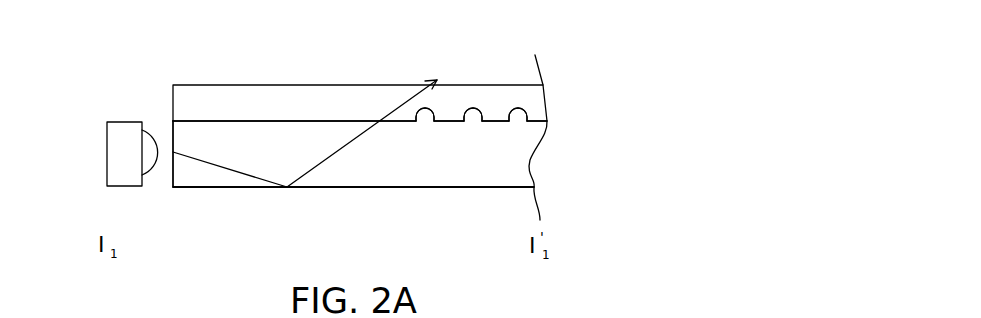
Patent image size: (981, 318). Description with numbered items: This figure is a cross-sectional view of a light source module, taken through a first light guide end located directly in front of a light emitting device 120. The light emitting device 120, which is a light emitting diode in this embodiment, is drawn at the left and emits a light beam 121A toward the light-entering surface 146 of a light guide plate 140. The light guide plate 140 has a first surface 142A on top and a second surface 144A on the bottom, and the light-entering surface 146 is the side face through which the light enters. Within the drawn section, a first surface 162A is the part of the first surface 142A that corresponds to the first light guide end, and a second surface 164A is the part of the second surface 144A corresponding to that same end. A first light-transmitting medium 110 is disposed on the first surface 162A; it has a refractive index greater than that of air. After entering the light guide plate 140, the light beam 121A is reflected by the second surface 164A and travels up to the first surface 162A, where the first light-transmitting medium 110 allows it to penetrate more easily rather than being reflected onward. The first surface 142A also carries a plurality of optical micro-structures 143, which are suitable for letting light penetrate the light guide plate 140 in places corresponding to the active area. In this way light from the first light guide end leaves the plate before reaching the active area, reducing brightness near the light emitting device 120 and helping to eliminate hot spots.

The first light-transmitting medium 110 is at (288, 100).
The light emitting device 120 is at (115, 148).
The light beam 121A is at (388, 100).
The light guide plate 140 is at (388, 173).
The first surface 142A is at (360, 80).
The optical micro-structures 143 is at (480, 110).
The second surface 144A is at (350, 238).
The light-entering surface 146 is at (171, 173).
The first surface 162A is at (200, 120).
The second surface 164A is at (222, 190).